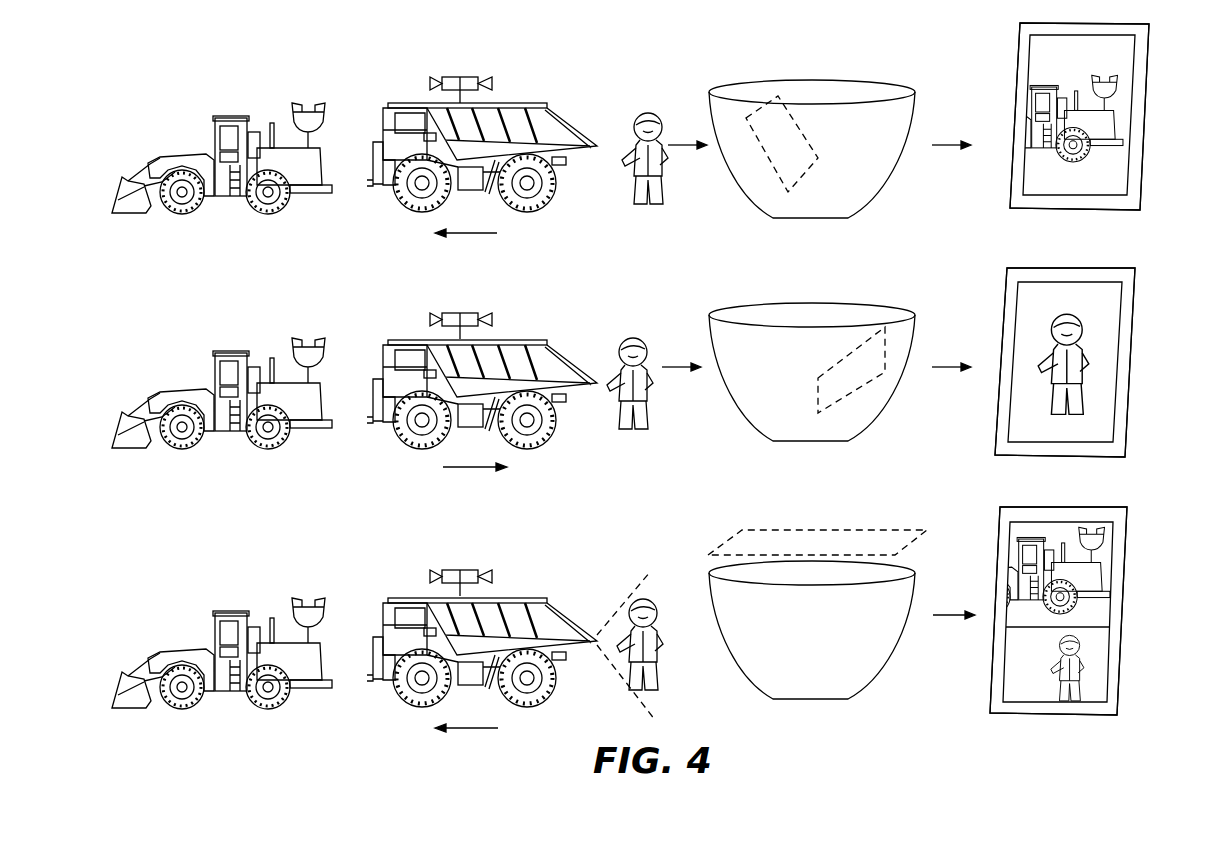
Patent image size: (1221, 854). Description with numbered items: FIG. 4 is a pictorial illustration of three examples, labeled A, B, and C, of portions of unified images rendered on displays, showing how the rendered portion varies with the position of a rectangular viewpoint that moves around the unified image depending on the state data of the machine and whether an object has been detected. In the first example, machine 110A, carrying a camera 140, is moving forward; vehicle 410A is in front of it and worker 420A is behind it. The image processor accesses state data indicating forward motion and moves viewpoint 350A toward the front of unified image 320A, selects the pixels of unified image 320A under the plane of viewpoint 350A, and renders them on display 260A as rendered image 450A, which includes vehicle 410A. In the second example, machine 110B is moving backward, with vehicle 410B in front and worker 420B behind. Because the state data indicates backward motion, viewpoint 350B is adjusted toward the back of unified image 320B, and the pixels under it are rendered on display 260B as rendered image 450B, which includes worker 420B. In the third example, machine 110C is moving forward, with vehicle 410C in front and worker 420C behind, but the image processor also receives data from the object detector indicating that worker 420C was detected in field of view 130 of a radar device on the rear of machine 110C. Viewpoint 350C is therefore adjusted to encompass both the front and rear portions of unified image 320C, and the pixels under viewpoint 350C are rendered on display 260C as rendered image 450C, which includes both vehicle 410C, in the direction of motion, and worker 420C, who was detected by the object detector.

The machine 110A is at (555, 110).
The machine 110B is at (555, 347).
The machine 110C is at (555, 605).
The field of view 130 is at (636, 580).
The camera 140 is at (466, 76).
The display 260A is at (1020, 208).
The display 260B is at (1005, 457).
The display 260C is at (1000, 713).
The unified image 320A is at (882, 198).
The unified image 320B is at (882, 421).
The unified image 320C is at (882, 676).
The viewpoint 350A is at (782, 100).
The viewpoint 350B is at (880, 330).
The viewpoint 350C is at (868, 530).
The vehicle 410A is at (213, 120).
The vehicle 410B is at (213, 355).
The vehicle 410C is at (212, 612).
The worker 420A is at (655, 115).
The worker 420B is at (645, 340).
The worker 420C is at (650, 603).
The rendered image 450A is at (1135, 170).
The rendered image 450B is at (1125, 348).
The rendered image 450C is at (1118, 678).